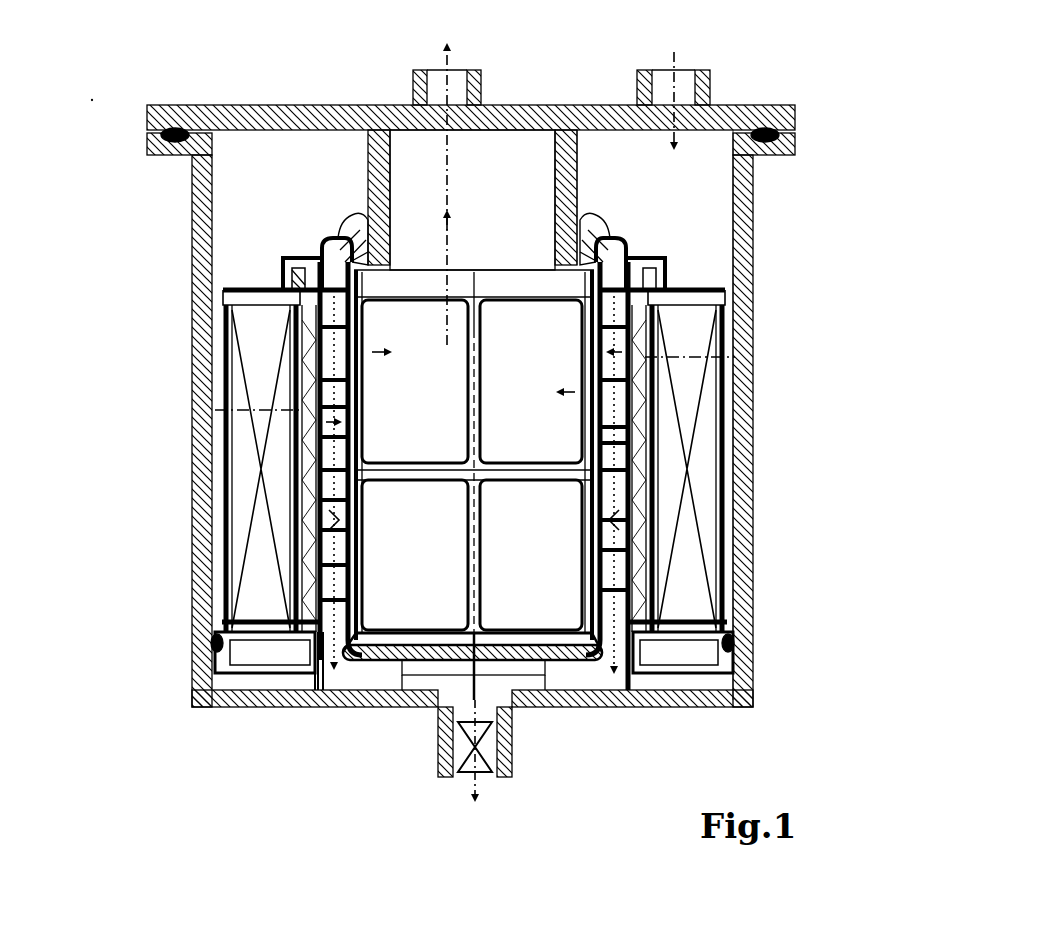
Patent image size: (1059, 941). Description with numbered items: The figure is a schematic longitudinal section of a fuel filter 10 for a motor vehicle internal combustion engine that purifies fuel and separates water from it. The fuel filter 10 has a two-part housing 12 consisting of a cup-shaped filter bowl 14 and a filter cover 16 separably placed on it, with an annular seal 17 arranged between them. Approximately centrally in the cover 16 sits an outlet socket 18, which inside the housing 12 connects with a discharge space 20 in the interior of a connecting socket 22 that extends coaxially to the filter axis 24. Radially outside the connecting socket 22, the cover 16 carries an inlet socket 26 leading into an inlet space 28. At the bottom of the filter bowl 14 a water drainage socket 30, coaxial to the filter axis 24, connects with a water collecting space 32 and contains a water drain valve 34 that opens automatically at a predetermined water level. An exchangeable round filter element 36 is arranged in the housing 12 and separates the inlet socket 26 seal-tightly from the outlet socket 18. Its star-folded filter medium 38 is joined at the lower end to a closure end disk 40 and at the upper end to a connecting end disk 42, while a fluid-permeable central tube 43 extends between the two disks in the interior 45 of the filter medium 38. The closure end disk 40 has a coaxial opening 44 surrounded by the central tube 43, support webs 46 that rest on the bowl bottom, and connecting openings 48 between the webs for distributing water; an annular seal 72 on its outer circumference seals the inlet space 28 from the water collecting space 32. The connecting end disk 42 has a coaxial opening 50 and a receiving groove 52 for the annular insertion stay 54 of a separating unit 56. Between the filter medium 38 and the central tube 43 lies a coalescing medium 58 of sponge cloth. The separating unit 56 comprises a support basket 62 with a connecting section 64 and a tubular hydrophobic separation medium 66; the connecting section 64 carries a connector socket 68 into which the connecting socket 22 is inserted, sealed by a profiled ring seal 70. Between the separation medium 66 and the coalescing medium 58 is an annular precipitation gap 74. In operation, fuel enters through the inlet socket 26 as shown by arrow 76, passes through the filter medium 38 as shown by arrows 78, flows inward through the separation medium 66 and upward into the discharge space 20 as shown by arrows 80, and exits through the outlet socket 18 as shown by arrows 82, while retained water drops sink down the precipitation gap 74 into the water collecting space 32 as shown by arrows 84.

The fuel filter 10 is at (92, 100).
The housing 12 is at (175, 212).
The filter bowl 14 is at (195, 262).
The filter cover 16 is at (275, 118).
The annular seal 17 is at (795, 148).
The outlet socket 18 is at (420, 88).
The discharge space 20 is at (531, 172).
The connecting socket 22 is at (372, 165).
The filter axis 24 is at (478, 300).
The inlet socket 26 is at (712, 82).
The inlet space 28 is at (720, 187).
The water drainage socket 30 is at (440, 778).
The water collecting space 32 is at (535, 707).
The water drain valve 34 is at (512, 762).
The filter element 36 is at (268, 262).
The filter medium 38 is at (225, 372).
The closure end disk 40 is at (262, 690).
The connecting end disk 42 is at (225, 293).
The central tube 43 is at (318, 470).
The opening 44 is at (320, 690).
The interior 45 is at (316, 562).
The support webs 46 is at (385, 690).
The connecting openings 48 is at (440, 690).
The opening 50 is at (370, 310).
The receiving groove 52 is at (725, 293).
The insertion stay 54 is at (660, 272).
The separating unit 56 is at (300, 250).
The coalescing medium 58 is at (318, 520).
The support basket 62 is at (365, 555).
The connecting section 64 is at (642, 250).
The separation medium 66 is at (618, 700).
The connector socket 68 is at (330, 240).
The profiled ring seal 70 is at (590, 218).
The annular seal 72 is at (214, 642).
The precipitation gap 74 is at (295, 615).
The arrow 76 is at (665, 62).
The arrows 78 is at (735, 370).
The arrows 80 is at (372, 360).
The arrows 82 is at (452, 55).
The arrows 84 is at (680, 675).